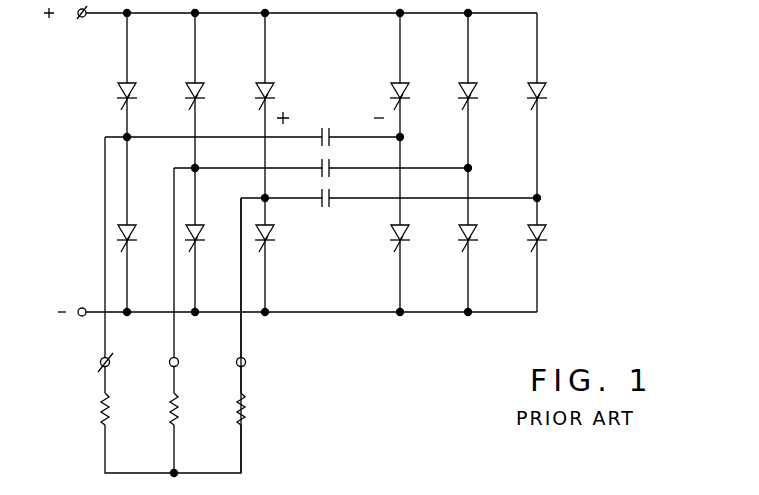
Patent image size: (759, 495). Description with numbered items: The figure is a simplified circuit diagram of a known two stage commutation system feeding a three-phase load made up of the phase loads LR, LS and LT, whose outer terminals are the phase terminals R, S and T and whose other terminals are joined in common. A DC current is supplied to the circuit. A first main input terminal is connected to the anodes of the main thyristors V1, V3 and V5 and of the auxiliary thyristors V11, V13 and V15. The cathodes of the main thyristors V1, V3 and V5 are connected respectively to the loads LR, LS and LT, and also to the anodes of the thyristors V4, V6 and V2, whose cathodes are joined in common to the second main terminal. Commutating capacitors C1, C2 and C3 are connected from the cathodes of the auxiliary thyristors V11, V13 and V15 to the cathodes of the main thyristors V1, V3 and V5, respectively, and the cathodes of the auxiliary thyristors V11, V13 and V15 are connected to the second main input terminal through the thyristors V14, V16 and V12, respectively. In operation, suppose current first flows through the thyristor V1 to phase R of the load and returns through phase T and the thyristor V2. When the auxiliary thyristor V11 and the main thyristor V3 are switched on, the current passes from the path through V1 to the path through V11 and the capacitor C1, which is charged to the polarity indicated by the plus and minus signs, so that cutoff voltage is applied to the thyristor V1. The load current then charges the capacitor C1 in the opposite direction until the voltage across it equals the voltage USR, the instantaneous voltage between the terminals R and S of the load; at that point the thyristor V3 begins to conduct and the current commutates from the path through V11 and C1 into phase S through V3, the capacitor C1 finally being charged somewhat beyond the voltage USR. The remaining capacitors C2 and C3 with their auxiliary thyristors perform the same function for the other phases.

The main thyristor V1 is at (137, 96).
The thyristor V2 is at (275, 230).
The main thyristor V3 is at (205, 96).
The thyristor V4 is at (137, 230).
The main thyristor V5 is at (275, 96).
The thyristor V6 is at (205, 230).
The auxiliary thyristor V11 is at (410, 96).
The thyristor V12 is at (547, 230).
The auxiliary thyristor V13 is at (478, 96).
The thyristor V14 is at (410, 230).
The auxiliary thyristor V15 is at (547, 96).
The thyristor V16 is at (478, 230).
The commutating capacitor C1 is at (331, 127).
The commutating capacitor C2 is at (331, 158).
The commutating capacitor C3 is at (331, 189).
The load LR is at (111, 410).
The load LS is at (180, 410).
The load LT is at (247, 410).
The phase R terminal R is at (95, 362).
The phase S terminal S is at (179, 360).
The phase T terminal T is at (246, 360).
The voltage USR is at (139, 358).